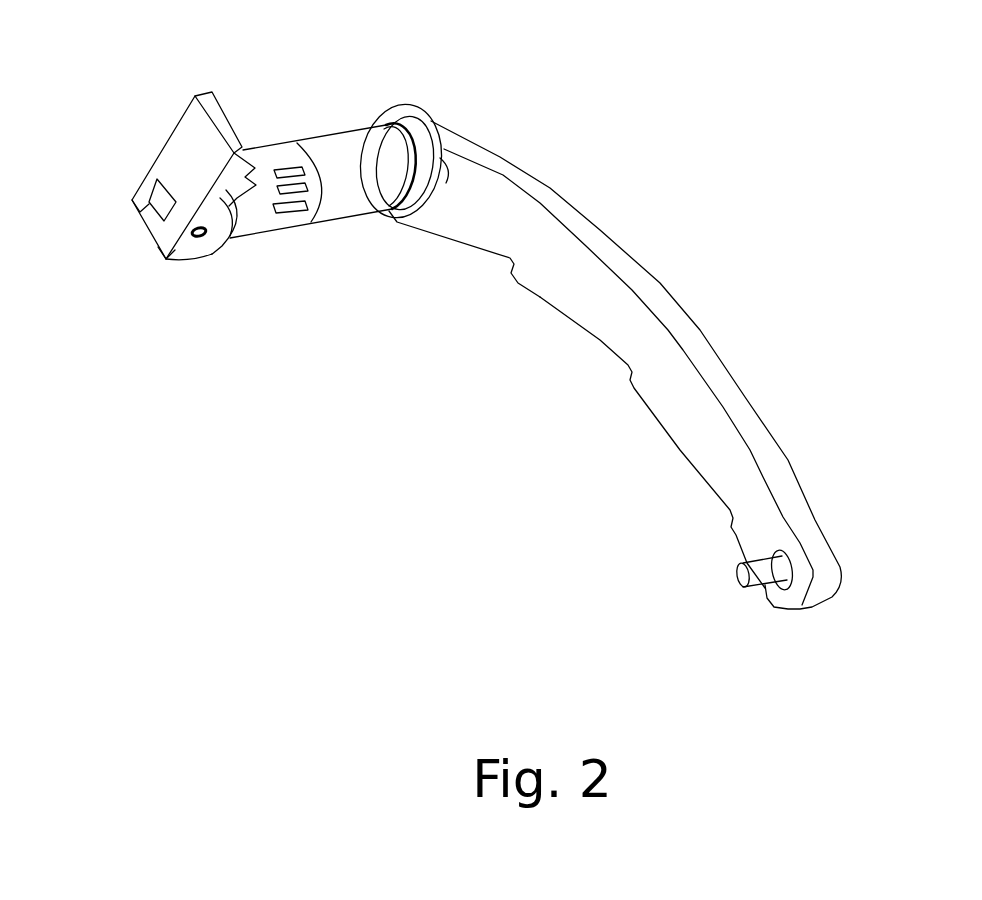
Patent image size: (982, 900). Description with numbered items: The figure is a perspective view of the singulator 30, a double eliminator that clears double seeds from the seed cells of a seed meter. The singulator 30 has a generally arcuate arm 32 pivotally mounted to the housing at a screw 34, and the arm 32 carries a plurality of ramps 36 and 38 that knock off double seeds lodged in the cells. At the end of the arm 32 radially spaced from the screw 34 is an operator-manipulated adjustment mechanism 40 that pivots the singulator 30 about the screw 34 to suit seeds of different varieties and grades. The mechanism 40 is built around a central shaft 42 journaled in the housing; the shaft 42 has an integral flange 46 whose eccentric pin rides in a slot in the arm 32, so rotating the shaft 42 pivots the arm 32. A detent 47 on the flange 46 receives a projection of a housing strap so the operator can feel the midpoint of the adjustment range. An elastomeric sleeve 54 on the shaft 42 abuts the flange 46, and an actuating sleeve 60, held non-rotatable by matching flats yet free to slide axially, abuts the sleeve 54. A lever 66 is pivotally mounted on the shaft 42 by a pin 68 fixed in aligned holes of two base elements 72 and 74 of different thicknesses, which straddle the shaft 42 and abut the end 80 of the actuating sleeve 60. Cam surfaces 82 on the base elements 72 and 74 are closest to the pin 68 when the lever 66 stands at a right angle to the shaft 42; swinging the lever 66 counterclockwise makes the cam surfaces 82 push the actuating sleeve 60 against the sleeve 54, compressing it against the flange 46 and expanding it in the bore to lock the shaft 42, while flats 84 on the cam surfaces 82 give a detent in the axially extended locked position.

The singulator 30 is at (692, 259).
The arm 32 is at (697, 393).
The screw 34 is at (738, 578).
The ramp 36 is at (577, 325).
The ramp 38 is at (462, 243).
The adjustment mechanism 40 is at (333, 262).
The central shaft 42 is at (158, 217).
The integral flange 46 is at (408, 138).
The detent 47 is at (438, 172).
The sleeve 54 is at (362, 208).
The actuating sleeve 60 is at (267, 218).
The lever 66 is at (173, 128).
The pin 68 is at (212, 240).
The base element 72 is at (190, 257).
The base element 74 is at (143, 183).
The end of actuating sleeve 80 is at (230, 227).
The cam surfaces 82 is at (200, 243).
The flats 84 is at (168, 257).